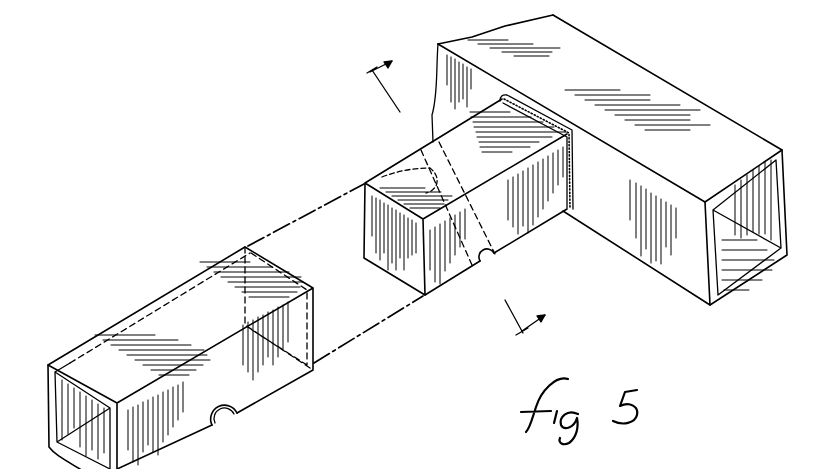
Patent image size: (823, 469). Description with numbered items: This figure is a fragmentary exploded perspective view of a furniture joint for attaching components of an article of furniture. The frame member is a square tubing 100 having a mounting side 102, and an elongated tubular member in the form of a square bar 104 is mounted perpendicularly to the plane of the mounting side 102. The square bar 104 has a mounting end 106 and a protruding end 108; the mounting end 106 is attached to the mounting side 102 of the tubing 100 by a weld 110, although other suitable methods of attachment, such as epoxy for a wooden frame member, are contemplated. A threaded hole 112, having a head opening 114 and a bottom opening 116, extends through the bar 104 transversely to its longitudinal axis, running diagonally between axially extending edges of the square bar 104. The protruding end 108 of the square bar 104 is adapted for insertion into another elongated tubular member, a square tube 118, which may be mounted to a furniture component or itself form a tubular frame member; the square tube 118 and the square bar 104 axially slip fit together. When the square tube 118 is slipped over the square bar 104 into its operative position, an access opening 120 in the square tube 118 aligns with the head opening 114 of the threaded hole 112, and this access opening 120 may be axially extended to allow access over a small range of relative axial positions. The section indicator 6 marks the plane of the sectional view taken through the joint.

The square tubing 100 is at (662, 79).
The mounting side 102 is at (658, 243).
The square bar 104 is at (453, 280).
The mounting end 106 is at (548, 114).
The protruding end 108 is at (393, 255).
The weld 110 is at (574, 182).
The threaded hole 112 is at (376, 178).
The head opening 114 is at (482, 258).
The bottom opening 116 is at (427, 153).
The square tube 118 is at (130, 315).
The access opening 120 is at (228, 416).
The section line 6- 6 is at (466, 191).